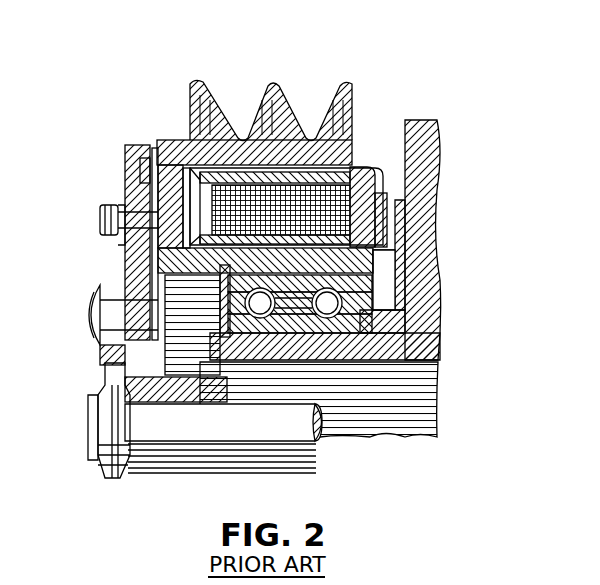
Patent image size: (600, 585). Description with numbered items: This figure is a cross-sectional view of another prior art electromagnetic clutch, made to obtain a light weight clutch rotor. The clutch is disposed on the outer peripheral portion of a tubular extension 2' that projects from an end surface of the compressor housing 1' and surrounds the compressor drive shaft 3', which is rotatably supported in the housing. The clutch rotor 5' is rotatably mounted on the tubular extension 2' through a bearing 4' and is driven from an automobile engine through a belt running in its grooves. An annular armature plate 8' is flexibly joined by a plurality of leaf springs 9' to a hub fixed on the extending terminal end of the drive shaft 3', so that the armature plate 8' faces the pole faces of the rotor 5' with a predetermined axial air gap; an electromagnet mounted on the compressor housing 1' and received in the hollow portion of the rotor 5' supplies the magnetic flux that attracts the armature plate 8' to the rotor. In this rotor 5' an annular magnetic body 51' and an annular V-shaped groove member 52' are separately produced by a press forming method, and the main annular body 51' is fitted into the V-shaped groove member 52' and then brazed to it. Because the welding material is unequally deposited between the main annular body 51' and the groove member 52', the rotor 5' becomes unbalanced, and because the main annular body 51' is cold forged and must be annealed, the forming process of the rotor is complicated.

The compressor housing 1' is at (451, 240).
The tubular extension 2' is at (319, 396).
The drive shaft 3' is at (246, 448).
The bearing 4' is at (313, 304).
The rotor 5' is at (281, 157).
The armature plate 8' is at (113, 235).
The leaf springs 9' is at (96, 285).
The annular magnetic body 51' is at (153, 166).
The V-shaped groove member 52' is at (288, 144).